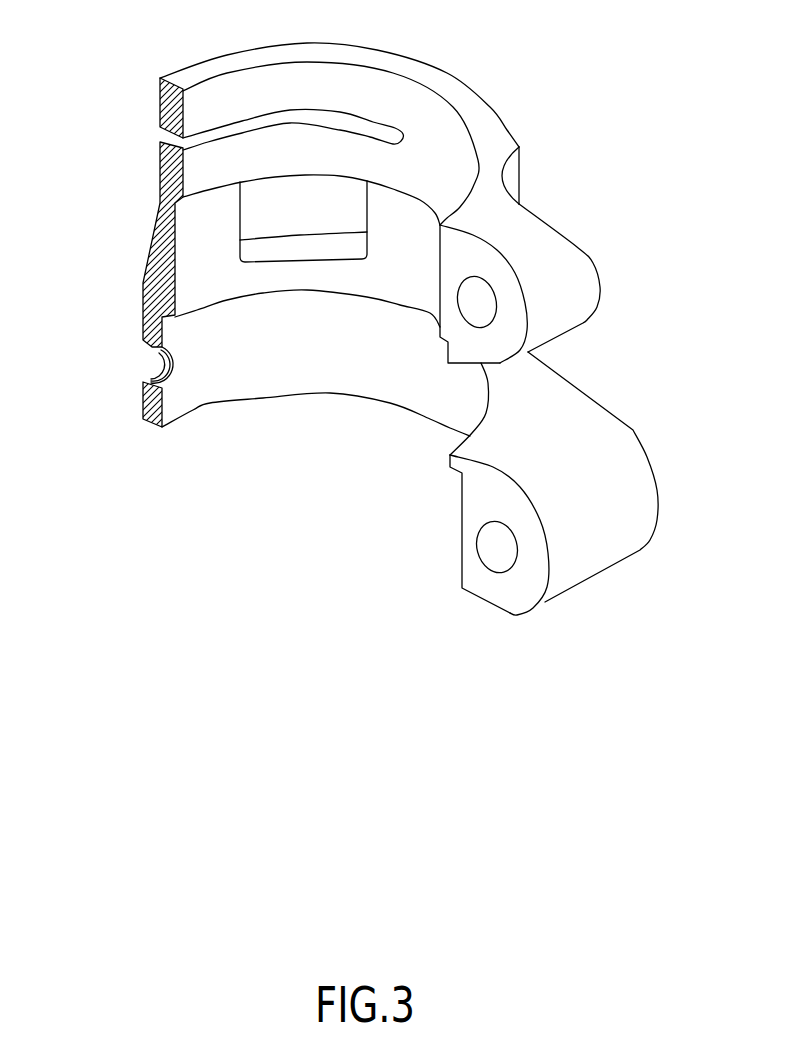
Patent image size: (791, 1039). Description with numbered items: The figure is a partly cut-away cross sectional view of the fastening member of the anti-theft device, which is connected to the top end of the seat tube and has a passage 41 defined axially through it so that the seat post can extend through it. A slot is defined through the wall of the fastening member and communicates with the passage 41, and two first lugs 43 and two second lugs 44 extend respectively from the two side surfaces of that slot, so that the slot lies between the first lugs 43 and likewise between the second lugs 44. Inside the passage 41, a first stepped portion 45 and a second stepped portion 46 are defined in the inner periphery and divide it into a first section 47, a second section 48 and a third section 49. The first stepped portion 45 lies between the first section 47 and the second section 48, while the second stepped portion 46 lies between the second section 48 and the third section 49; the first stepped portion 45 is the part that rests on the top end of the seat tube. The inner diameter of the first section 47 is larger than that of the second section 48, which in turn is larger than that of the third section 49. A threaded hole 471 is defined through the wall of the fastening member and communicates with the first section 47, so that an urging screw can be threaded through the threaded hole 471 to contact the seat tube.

The passage 41 is at (410, 77).
The first lug 43 is at (580, 420).
The second lug 44 is at (573, 255).
The first stepped portion 45 is at (173, 326).
The second stepped portion 46 is at (180, 214).
The first section 47 is at (197, 390).
The threaded hole 471 is at (149, 380).
The second section 48 is at (185, 283).
The third section 49 is at (195, 109).